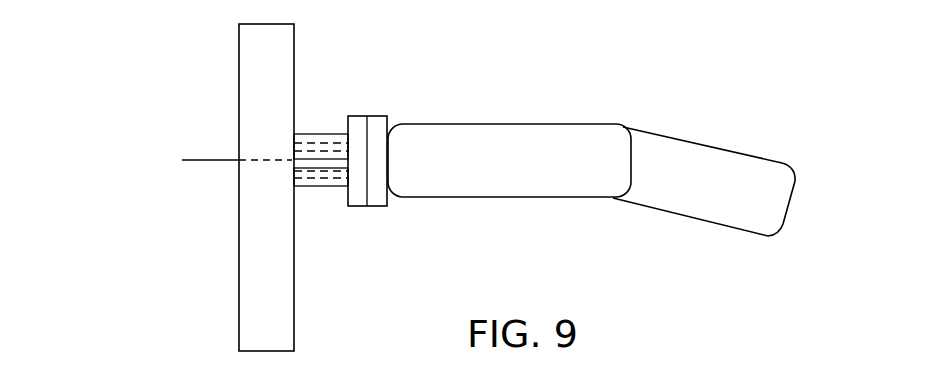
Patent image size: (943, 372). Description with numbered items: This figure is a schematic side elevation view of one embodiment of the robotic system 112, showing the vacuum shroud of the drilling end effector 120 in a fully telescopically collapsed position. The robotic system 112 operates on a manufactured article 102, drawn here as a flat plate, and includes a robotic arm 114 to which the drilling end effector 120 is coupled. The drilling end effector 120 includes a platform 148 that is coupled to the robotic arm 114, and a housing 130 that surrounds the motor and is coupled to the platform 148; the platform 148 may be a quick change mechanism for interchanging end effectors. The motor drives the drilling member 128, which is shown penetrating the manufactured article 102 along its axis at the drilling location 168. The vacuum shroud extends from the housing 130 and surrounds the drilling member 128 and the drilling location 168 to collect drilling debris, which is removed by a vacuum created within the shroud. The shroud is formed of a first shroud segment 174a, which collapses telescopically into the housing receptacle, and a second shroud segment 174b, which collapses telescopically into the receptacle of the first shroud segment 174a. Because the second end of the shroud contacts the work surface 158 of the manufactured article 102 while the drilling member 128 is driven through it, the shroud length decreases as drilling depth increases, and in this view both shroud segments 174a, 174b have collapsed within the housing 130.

The manufactured article 102 is at (227, 198).
The robotic system 112 is at (621, 135).
The robotic arm 114 is at (510, 124).
The drilling end effector 120 is at (400, 218).
The drilling member 128 is at (210, 160).
The housing 130 is at (340, 177).
The platform 148 is at (358, 116).
The work surface 158 is at (294, 310).
The drilling location 168 is at (292, 160).
The first shroud segment 174a is at (340, 186).
The second shroud segment 174b is at (314, 171).